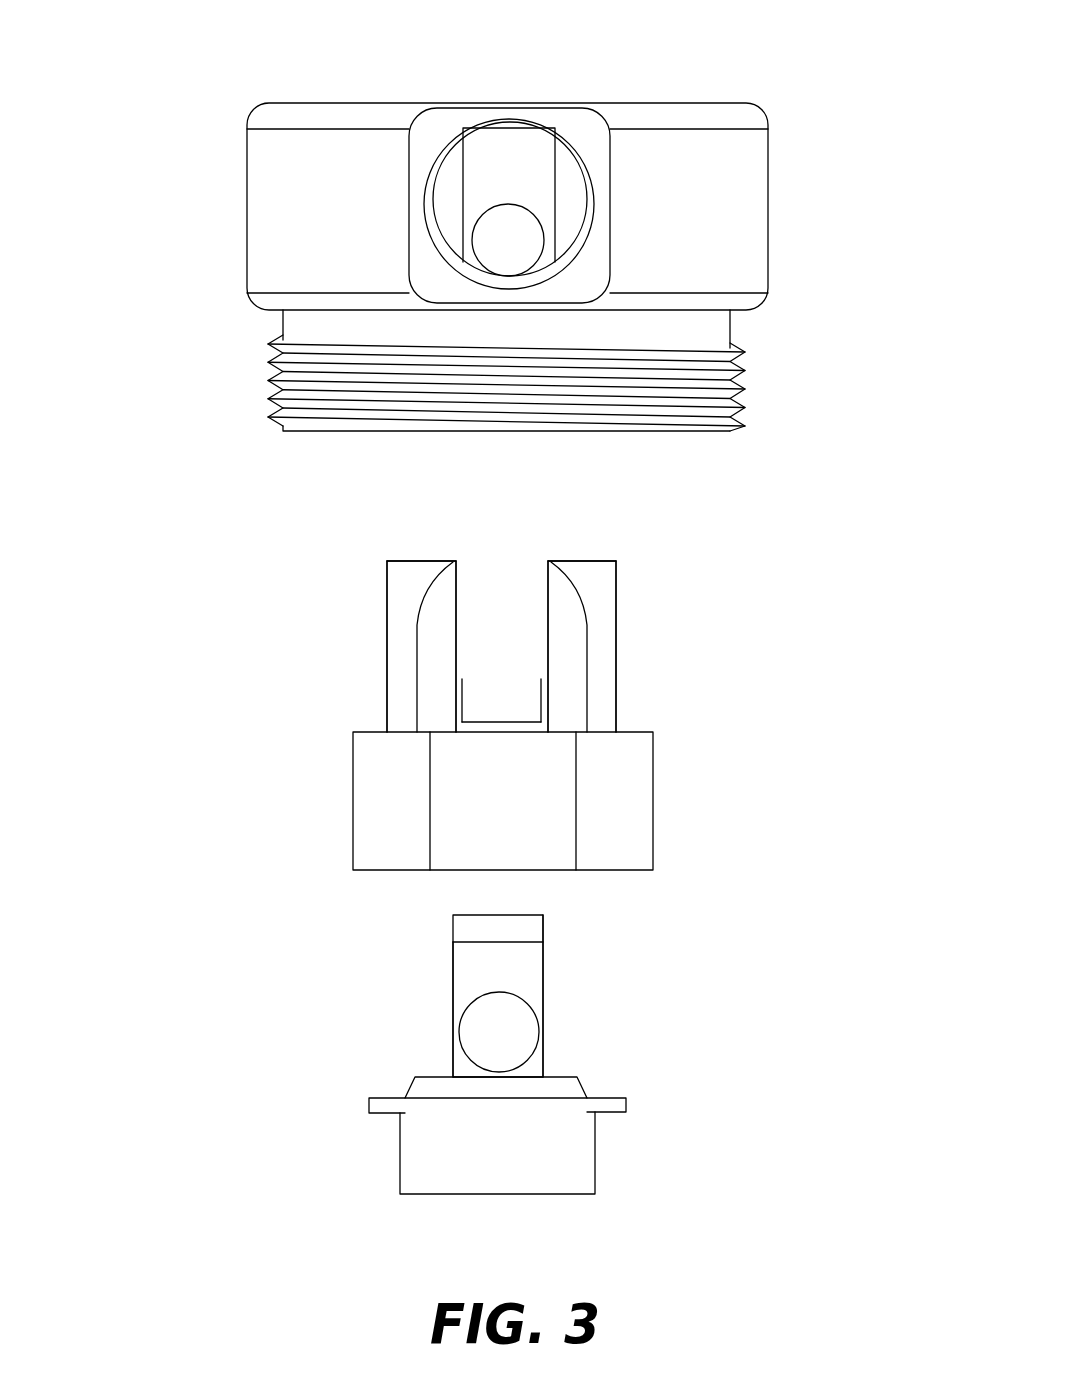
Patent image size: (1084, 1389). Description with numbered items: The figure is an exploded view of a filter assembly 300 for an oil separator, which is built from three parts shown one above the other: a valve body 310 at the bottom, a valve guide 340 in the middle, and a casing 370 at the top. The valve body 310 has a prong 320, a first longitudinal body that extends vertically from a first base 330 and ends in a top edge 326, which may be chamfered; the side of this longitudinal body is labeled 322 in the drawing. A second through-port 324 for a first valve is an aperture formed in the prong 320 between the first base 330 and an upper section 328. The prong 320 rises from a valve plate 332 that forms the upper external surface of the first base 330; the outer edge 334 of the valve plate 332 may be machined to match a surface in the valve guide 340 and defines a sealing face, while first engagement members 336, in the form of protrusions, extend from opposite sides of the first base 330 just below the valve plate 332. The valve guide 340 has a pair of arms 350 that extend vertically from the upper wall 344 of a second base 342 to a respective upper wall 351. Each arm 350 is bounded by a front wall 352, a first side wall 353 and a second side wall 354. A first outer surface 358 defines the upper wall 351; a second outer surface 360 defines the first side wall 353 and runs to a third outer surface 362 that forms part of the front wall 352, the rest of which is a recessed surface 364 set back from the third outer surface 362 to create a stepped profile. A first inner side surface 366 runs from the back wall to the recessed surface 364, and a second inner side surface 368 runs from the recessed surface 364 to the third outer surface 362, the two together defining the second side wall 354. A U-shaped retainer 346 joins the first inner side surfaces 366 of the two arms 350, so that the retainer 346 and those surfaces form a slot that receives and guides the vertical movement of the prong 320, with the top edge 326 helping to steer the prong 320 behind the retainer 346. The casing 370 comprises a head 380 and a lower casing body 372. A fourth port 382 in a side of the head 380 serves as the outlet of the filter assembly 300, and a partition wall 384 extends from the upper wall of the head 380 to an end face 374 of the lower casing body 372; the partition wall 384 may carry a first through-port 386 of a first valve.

The filter assembly 300 is at (112, 82).
The valve body 310 is at (192, 1115).
The prong 320 is at (570, 1029).
The tube side wall 322 is at (543, 960).
The second through-port 324 is at (473, 1002).
The top edge 326 is at (468, 932).
The upper section 328 is at (525, 970).
The first base 330 is at (595, 1157).
The valve plate 332 is at (433, 1077).
The outer edge 334 is at (413, 1083).
The first engagement members 336 is at (626, 1105).
The valve guide 340 is at (165, 748).
The second base 342 is at (661, 832).
The upper wall 344 is at (628, 730).
The retainer 346 is at (500, 736).
The arms 350 is at (362, 638).
The upper wall 351 is at (406, 555).
The front wall 352 is at (437, 693).
The first side wall 353 is at (380, 609).
The second side wall 354 is at (468, 585).
The first outer surface 358 is at (582, 560).
The second outer surface 360 is at (617, 617).
The third outer surface 362 is at (600, 574).
The recessed surface 364 is at (568, 623).
The first inner side surface 366 is at (547, 665).
The second inner side surface 368 is at (577, 588).
The casing 370 is at (160, 266).
The lower casing body 372 is at (857, 313).
The end face 374 is at (740, 431).
The head 380 is at (858, 103).
The fourth port 382 is at (453, 152).
The partition wall 384 is at (565, 173).
The first through-port 386 is at (532, 215).